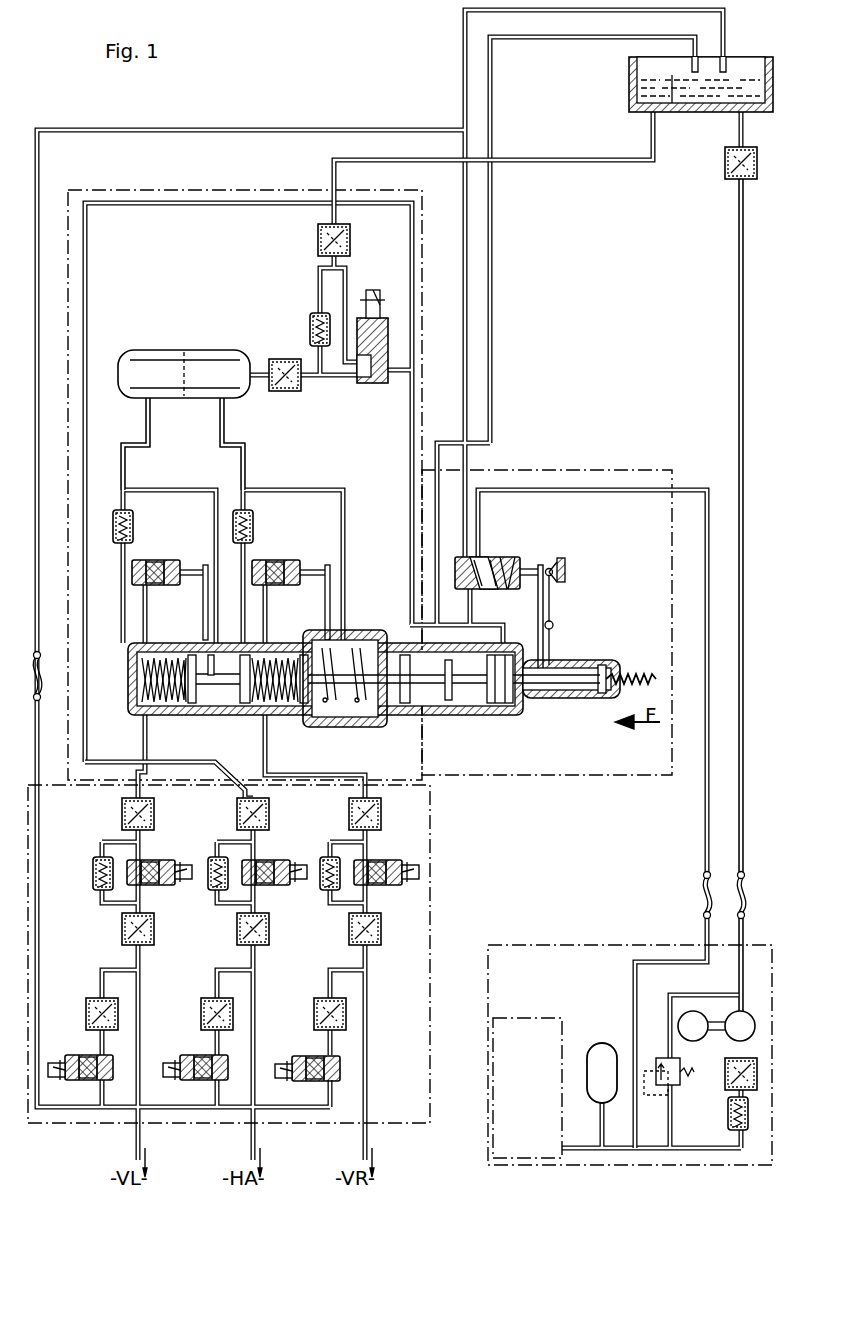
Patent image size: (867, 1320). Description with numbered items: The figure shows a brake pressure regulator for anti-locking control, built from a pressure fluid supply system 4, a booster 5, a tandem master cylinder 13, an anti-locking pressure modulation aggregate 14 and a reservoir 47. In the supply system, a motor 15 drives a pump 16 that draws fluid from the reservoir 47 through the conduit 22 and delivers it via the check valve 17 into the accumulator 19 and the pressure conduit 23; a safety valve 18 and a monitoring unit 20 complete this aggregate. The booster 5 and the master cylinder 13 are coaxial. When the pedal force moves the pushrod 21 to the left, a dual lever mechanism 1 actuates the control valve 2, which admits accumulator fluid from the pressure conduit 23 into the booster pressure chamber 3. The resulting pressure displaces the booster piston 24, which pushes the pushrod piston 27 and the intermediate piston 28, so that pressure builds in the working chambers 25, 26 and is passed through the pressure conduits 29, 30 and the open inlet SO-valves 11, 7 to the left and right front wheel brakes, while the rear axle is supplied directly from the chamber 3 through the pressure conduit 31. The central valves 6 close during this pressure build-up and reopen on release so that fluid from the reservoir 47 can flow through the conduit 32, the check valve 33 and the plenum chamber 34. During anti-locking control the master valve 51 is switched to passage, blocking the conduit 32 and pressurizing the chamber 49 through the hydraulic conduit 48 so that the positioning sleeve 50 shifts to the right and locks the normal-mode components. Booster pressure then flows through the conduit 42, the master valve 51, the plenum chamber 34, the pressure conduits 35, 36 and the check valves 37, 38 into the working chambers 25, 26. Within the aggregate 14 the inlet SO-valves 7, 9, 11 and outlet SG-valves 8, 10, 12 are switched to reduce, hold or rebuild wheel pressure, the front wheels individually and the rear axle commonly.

The dual lever mechanism 1 is at (552, 600).
The control valve 2 is at (497, 556).
The booster pressure chamber 3 is at (500, 706).
The pressure fluid supply system 4 is at (565, 945).
The booster 5 is at (458, 716).
The central valves 6 is at (160, 562).
The SO-valve 7 is at (378, 860).
The SG-valve 8 is at (312, 1057).
The SO-valve 9 is at (266, 860).
The SG-valve 10 is at (197, 1056).
The SO-valve 11 is at (150, 860).
The SG-valve 12 is at (82, 1056).
The tandem master cylinder 13 is at (364, 686).
The anti-locking pressure modulation aggregate 14 is at (432, 922).
The motor 15 is at (680, 1018).
The pump 16 is at (748, 1015).
The check valve 17 is at (728, 1108).
The safety valve 18 is at (672, 1088).
The accumulator 19 is at (600, 1045).
The monitoring unit 20 is at (523, 1020).
The pushrod 21 is at (630, 670).
The conduit 22 is at (743, 940).
The pressure conduit 23 is at (705, 940).
The booster piston 24 is at (450, 706).
The working chamber 25 is at (262, 706).
The working chamber 26 is at (165, 706).
The pushrod piston 27 is at (340, 718).
The intermediate piston 28 is at (191, 706).
The pressure conduit 29 is at (144, 740).
The pressure conduit 30 is at (270, 772).
The pressure conduit 31 is at (232, 780).
The conduit 32 is at (612, 160).
The check valve 33 is at (310, 328).
The plenum chamber 34 is at (160, 360).
The pressure conduit 35 is at (245, 488).
The pressure conduit 36 is at (125, 488).
The check valve 37 is at (255, 528).
The check valve 38 is at (133, 528).
The conduit 42 is at (390, 376).
The reservoir 47 is at (630, 72).
The hydraulic conduit 48 is at (345, 514).
The chamber 49 is at (370, 718).
The positioning sleeve 50 is at (404, 706).
The master valve 51 is at (366, 380).